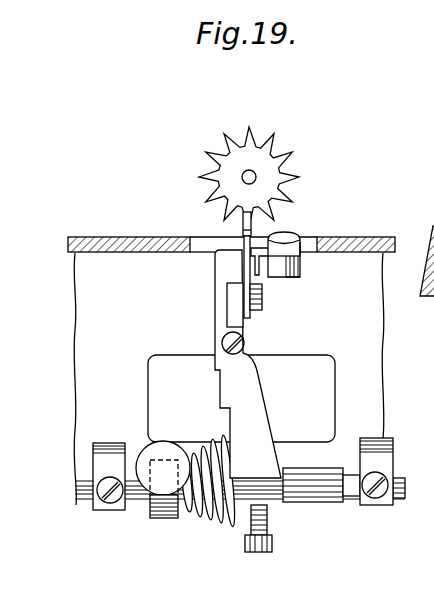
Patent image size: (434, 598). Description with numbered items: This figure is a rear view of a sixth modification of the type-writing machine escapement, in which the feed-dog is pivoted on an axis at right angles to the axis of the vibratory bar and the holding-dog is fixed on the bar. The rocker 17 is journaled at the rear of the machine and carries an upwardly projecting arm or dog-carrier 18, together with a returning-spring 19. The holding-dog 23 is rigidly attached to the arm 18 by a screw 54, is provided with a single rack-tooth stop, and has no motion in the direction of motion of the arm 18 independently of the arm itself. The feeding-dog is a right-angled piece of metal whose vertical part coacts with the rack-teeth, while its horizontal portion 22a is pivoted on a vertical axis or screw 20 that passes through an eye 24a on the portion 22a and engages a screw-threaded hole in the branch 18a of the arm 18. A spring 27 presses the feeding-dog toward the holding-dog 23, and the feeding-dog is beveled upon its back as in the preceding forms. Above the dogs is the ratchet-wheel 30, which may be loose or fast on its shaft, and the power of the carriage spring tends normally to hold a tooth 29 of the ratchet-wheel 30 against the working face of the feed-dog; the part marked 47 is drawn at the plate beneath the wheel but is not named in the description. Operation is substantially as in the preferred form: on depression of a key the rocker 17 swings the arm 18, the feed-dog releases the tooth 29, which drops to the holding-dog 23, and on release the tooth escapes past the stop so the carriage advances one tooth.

The rocker 17 is at (326, 496).
The arm or dog-carrier 18 is at (248, 401).
The branch of the arm 18a is at (297, 272).
The returning-spring 19 is at (222, 516).
The pivot screw 20 is at (286, 233).
The horizontal portion of the feeding-dog 22a is at (266, 257).
The holding-dog 23 is at (243, 268).
The eye 24a is at (304, 250).
The spring 27 is at (275, 236).
The tooth 29 is at (293, 181).
The ratchet-wheel 30 is at (249, 167).
The plate 47 is at (237, 236).
The screw 54 is at (263, 301).